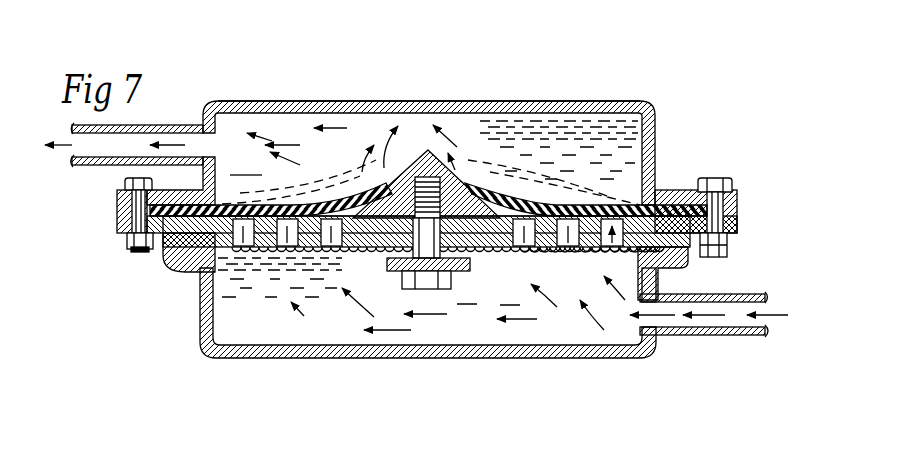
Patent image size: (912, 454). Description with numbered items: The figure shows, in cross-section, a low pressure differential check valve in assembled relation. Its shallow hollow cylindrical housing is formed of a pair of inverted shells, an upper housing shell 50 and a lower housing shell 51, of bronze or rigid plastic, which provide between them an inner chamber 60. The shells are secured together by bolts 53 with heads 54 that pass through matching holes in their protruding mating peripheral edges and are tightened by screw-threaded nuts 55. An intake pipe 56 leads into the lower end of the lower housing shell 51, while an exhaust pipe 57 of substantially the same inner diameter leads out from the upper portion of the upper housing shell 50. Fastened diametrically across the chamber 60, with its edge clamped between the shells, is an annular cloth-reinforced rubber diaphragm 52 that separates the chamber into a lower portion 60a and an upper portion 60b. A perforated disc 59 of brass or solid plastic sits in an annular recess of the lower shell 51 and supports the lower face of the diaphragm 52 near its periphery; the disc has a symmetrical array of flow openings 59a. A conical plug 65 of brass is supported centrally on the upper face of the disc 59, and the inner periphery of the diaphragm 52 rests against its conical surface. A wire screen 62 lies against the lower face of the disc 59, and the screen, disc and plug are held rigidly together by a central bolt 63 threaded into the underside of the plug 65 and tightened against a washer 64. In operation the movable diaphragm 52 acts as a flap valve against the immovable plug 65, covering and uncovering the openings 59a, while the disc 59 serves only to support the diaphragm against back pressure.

The upper housing shell 50 is at (267, 101).
The lower housing shell 51 is at (414, 358).
The diaphragm 52 is at (632, 205).
The bolts 53 is at (120, 205).
The bolt heads 54 is at (128, 180).
The screw-threaded nuts 55 is at (150, 250).
The intake pipe 56 is at (732, 335).
The exhaust pipe 57 is at (168, 126).
The perforated disc 59 is at (475, 256).
The openings 59a is at (172, 268).
The inner chamber 60 is at (218, 358).
The lower portion of chamber 60a is at (490, 334).
The upper portion of chamber 60b is at (362, 118).
The screen 62 is at (551, 264).
The bolt 63 is at (481, 175).
The washer 64 is at (391, 272).
The conical plug 65 is at (427, 150).